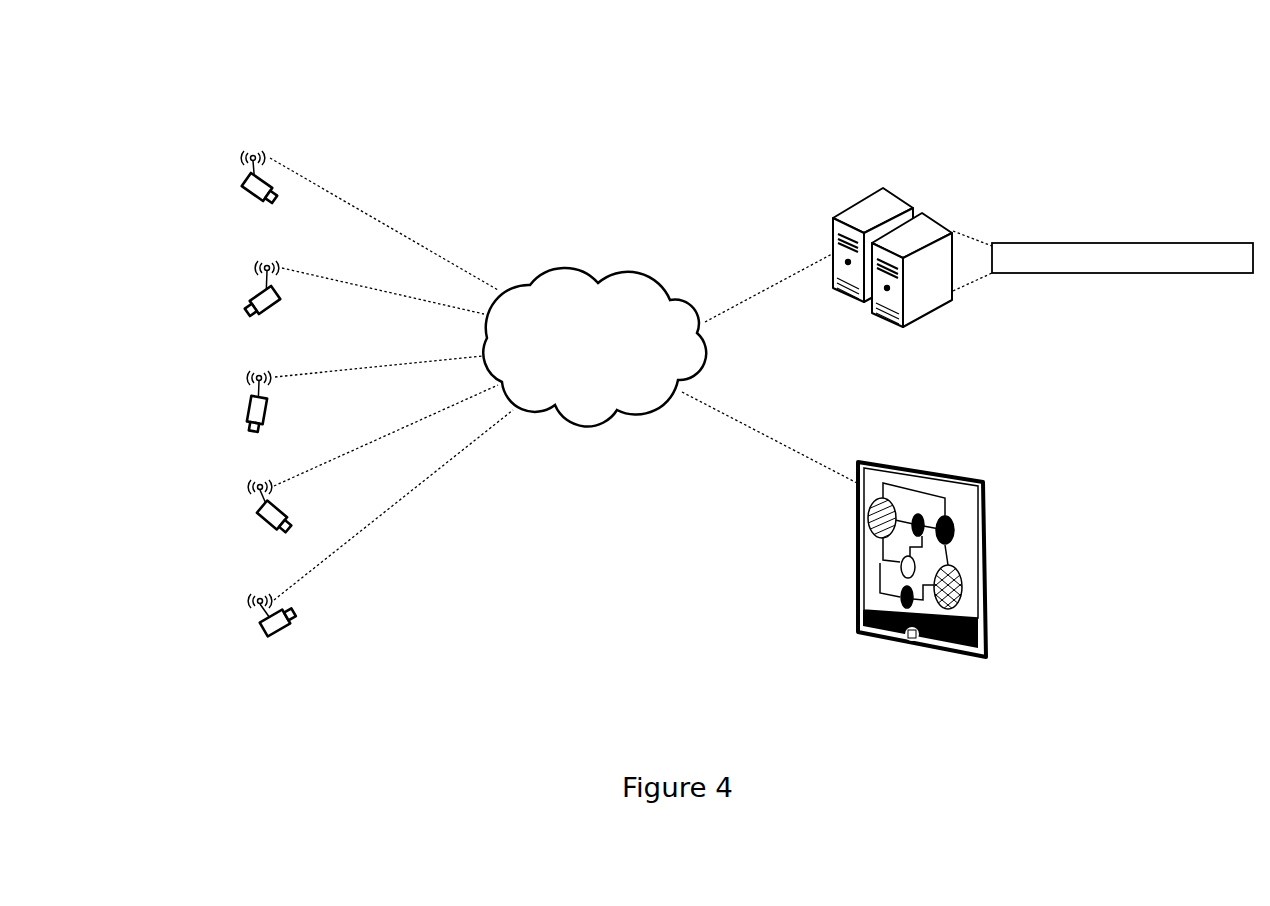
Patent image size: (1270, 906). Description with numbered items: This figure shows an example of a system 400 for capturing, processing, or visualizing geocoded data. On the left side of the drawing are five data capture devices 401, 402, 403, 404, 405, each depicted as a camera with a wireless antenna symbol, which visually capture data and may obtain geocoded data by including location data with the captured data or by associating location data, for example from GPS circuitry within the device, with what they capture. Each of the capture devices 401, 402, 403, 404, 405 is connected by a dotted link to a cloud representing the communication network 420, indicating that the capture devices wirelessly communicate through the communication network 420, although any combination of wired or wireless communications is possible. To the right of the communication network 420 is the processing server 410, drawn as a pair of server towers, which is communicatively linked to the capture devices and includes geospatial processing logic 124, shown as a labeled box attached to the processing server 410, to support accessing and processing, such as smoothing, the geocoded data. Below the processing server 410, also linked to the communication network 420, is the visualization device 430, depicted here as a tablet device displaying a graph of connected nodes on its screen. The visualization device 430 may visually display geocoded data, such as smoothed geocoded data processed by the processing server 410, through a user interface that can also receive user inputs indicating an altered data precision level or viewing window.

The system 400 is at (126, 57).
The capture device 401 is at (252, 195).
The capture device 402 is at (275, 306).
The capture device 403 is at (266, 416).
The capture device 404 is at (263, 517).
The capture device 405 is at (280, 633).
The processing server 410 is at (845, 208).
The communication network 420 is at (594, 347).
The geospatial processing logic 124 is at (1122, 258).
The visualization device 430 is at (957, 655).